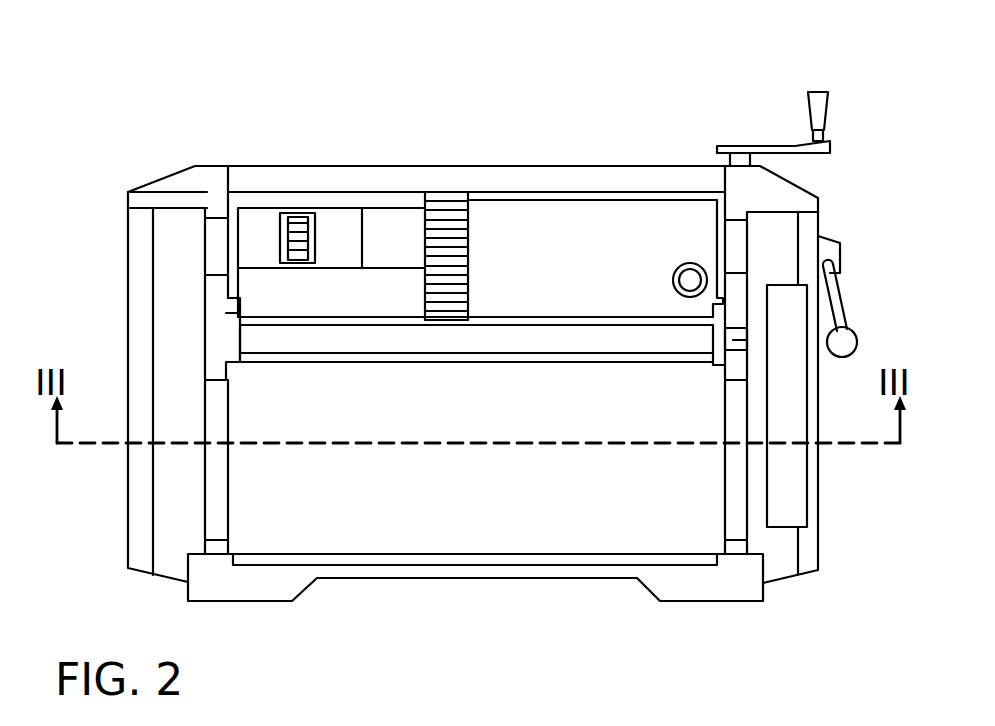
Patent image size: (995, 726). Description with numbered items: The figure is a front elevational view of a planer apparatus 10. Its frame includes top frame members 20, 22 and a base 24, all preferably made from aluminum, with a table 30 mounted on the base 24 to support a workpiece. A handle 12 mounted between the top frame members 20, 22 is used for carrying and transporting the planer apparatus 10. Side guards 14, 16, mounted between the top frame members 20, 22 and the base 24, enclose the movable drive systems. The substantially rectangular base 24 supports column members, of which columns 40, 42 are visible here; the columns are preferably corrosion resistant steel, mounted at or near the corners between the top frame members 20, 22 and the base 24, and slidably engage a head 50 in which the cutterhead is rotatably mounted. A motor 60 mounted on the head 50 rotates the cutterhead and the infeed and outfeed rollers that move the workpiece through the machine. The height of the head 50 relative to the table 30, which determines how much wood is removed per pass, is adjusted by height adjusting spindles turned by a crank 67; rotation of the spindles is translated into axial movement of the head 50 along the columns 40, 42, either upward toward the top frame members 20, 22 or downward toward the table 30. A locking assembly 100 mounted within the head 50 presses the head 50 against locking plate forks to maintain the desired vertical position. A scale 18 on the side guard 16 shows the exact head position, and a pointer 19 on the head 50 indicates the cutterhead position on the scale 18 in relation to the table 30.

The planer apparatus 10 is at (506, 84).
The handle 12 is at (335, 177).
The side guard 14 is at (138, 327).
The side guard 16 is at (812, 555).
The scale 18 is at (792, 497).
The pointer 19 is at (737, 340).
The top frame member 20 is at (168, 185).
The top frame member 22 is at (797, 193).
The base 24 is at (237, 590).
The table 30 is at (523, 553).
The column member 40 is at (222, 496).
The column member 42 is at (732, 499).
The head 50 is at (321, 374).
The motor 60 is at (590, 271).
The crank 67 is at (828, 110).
The locking assembly 100 is at (858, 253).